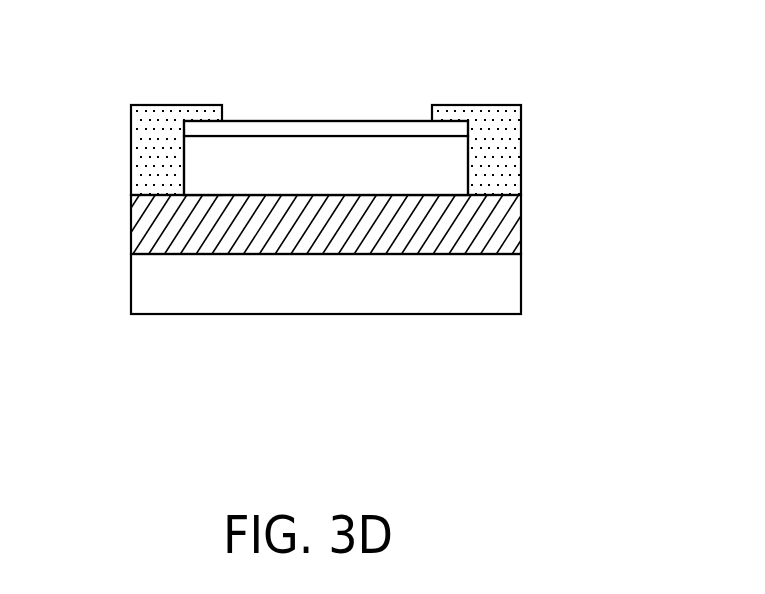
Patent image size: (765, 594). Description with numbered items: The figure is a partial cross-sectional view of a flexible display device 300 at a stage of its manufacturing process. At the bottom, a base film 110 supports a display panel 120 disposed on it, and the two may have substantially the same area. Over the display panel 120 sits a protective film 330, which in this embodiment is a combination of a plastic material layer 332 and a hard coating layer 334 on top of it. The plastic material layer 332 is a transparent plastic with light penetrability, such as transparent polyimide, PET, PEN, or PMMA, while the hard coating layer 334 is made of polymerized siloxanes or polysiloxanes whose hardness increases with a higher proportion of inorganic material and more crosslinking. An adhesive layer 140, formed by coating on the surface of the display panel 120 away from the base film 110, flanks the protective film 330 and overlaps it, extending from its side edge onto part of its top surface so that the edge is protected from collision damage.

The base film 110 is at (511, 290).
The display panel 120 is at (510, 224).
The adhesive layer 140 is at (146, 158).
The protective film 330 is at (608, 95).
The plastic material layer 332 is at (452, 166).
The hard coating layer 334 is at (456, 131).
The flexible display device 300 is at (690, 388).